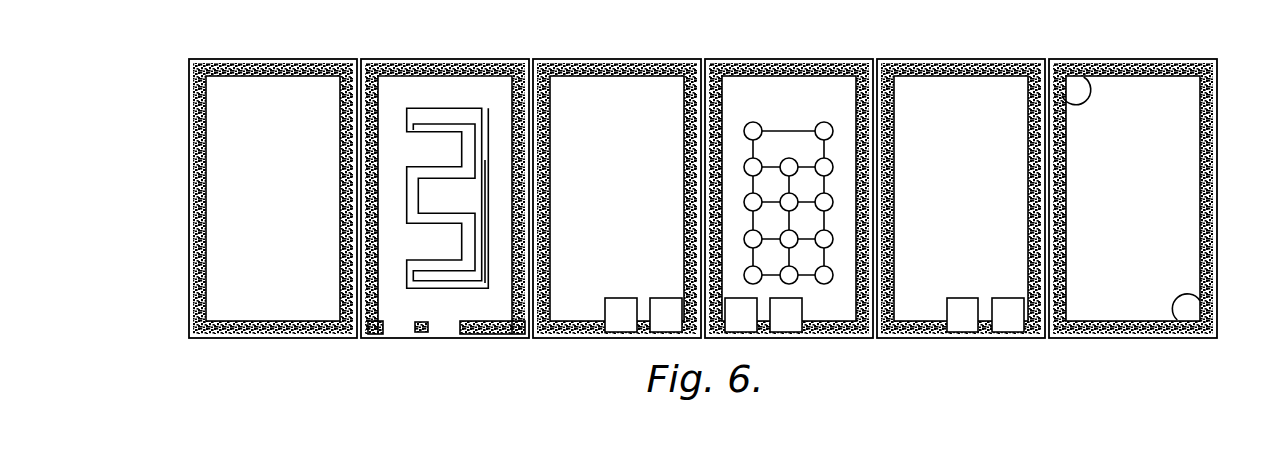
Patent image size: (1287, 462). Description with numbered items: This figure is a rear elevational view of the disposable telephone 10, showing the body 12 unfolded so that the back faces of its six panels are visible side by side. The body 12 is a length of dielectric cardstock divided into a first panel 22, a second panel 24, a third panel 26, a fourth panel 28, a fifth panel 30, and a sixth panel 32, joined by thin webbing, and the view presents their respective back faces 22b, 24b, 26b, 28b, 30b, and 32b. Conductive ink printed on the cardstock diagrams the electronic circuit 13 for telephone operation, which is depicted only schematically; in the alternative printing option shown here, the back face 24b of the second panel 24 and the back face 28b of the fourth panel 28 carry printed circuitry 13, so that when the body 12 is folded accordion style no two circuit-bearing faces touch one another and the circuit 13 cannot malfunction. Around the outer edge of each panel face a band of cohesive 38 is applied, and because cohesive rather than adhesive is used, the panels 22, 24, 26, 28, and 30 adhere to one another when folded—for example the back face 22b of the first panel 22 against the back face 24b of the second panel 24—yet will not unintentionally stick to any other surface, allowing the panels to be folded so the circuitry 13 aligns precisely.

The disposable telephone 10 is at (184, 56).
The body 12 is at (242, 86).
The electronic circuit 13 is at (478, 281).
The first panel 22 is at (1193, 143).
The back face of first panel 22b is at (1103, 310).
The second panel 24 is at (935, 84).
The back face of second panel 24b is at (923, 303).
The third panel 26 is at (768, 86).
The back face of third panel 26b is at (818, 308).
The fourth panel 28 is at (582, 86).
The back face of fourth panel 28b is at (585, 307).
The fifth panel 30 is at (413, 86).
The back face of fifth panel 30b is at (408, 310).
The sixth panel 32 is at (228, 193).
The back face of sixth panel 32b is at (288, 310).
The cohesive 38 is at (302, 66).